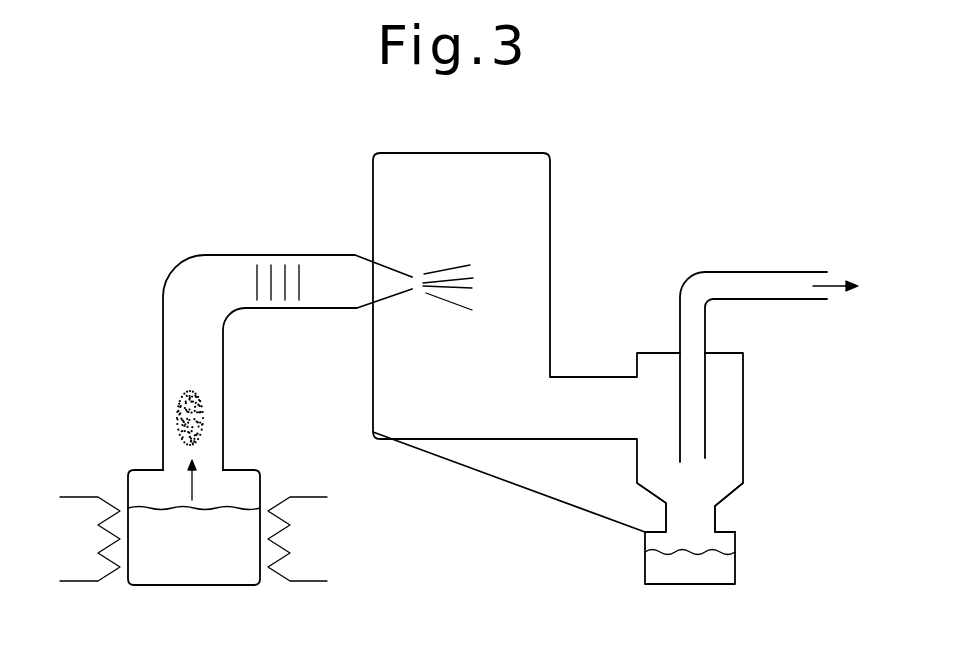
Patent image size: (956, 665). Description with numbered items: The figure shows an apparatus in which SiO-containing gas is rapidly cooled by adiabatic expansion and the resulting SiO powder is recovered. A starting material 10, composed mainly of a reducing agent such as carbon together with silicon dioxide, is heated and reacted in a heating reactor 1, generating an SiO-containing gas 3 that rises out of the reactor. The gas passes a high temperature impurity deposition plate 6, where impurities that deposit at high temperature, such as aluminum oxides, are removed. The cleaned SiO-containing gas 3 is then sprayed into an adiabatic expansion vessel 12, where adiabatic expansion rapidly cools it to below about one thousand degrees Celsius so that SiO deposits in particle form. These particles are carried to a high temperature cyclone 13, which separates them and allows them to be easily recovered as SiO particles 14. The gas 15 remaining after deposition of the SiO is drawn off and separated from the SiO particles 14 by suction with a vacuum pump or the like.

The heating reactor 1 is at (119, 488).
The SiO-containing gas 3 is at (205, 410).
The high temperature impurity deposition plate 6 is at (258, 278).
The starting material 10 is at (252, 573).
The adiabatic expansion vessel 12 is at (490, 165).
The high temperature cyclone 13 is at (668, 480).
The SiO particles 14 is at (723, 567).
The gas 15 is at (835, 282).